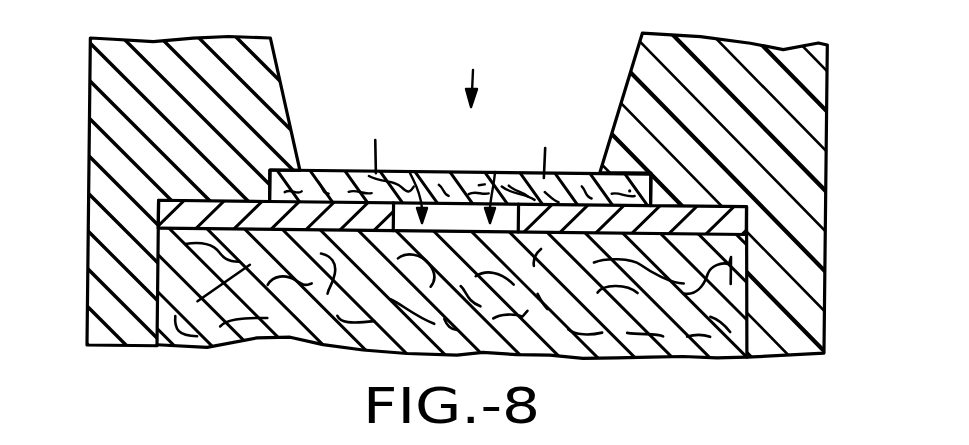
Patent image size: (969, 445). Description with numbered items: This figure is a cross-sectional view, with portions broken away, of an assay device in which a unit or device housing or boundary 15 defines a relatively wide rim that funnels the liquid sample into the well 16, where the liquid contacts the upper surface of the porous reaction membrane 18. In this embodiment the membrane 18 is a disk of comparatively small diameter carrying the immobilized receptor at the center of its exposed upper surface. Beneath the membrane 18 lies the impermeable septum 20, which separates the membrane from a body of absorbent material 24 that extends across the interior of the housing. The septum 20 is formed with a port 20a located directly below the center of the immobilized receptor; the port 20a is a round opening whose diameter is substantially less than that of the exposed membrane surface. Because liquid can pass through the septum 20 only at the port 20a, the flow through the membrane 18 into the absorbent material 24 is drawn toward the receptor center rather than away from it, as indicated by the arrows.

The device housing 15 is at (92, 138).
The well 16 is at (476, 75).
The porous reaction membrane 18 is at (330, 197).
The septum 20 is at (563, 210).
The port 20a is at (452, 212).
The absorbent material body 24 is at (668, 343).